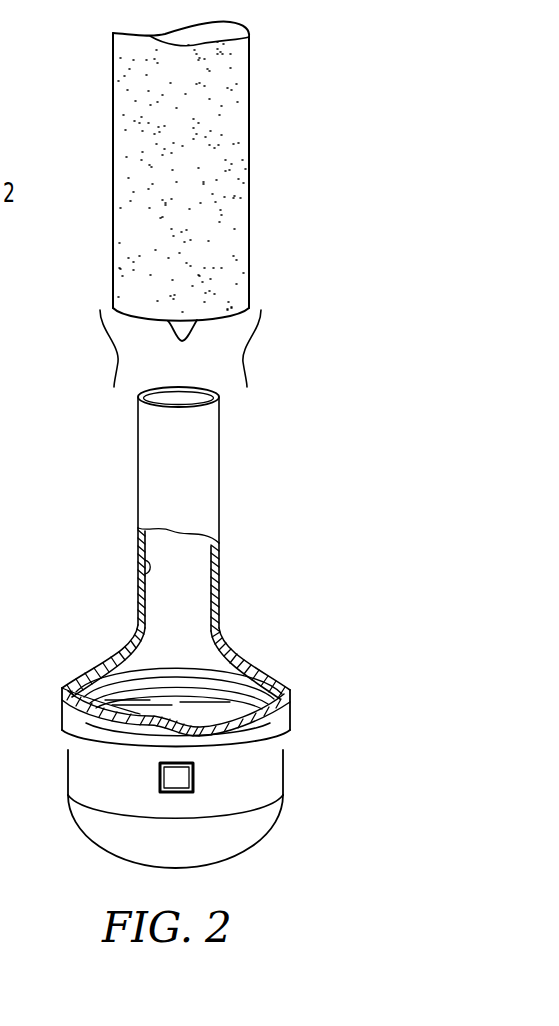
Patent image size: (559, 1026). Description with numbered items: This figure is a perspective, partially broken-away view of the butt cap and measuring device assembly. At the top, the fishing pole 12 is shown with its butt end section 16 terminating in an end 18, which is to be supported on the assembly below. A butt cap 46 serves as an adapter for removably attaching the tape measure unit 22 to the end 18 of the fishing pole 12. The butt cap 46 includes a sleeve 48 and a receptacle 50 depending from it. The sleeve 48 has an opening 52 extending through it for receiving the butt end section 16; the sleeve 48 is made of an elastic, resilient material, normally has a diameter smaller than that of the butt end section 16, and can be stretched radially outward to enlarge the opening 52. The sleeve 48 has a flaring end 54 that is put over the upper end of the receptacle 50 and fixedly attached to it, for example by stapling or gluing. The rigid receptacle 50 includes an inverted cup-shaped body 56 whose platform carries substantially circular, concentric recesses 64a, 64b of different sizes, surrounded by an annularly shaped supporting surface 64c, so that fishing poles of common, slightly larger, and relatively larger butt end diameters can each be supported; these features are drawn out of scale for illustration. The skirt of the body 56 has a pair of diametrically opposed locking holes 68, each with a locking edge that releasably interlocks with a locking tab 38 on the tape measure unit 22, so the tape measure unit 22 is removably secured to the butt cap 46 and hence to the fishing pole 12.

The fishing pole 12 is at (266, 68).
The butt end section 16 is at (232, 176).
The end 18 is at (182, 340).
The tape measure unit 22 is at (200, 840).
The locking tabs 38 is at (172, 780).
The butt cap 46 is at (195, 543).
The sleeve 48 is at (192, 487).
The receptacle 50 is at (182, 791).
The opening 52 is at (138, 565).
The flaring end 54 is at (98, 680).
The inverted cup-shaped body 56 is at (263, 774).
The recess 64a is at (207, 706).
The recess 64b is at (133, 697).
The annularly shaped supporting surface 64c is at (186, 670).
The locking holes 68 is at (160, 775).